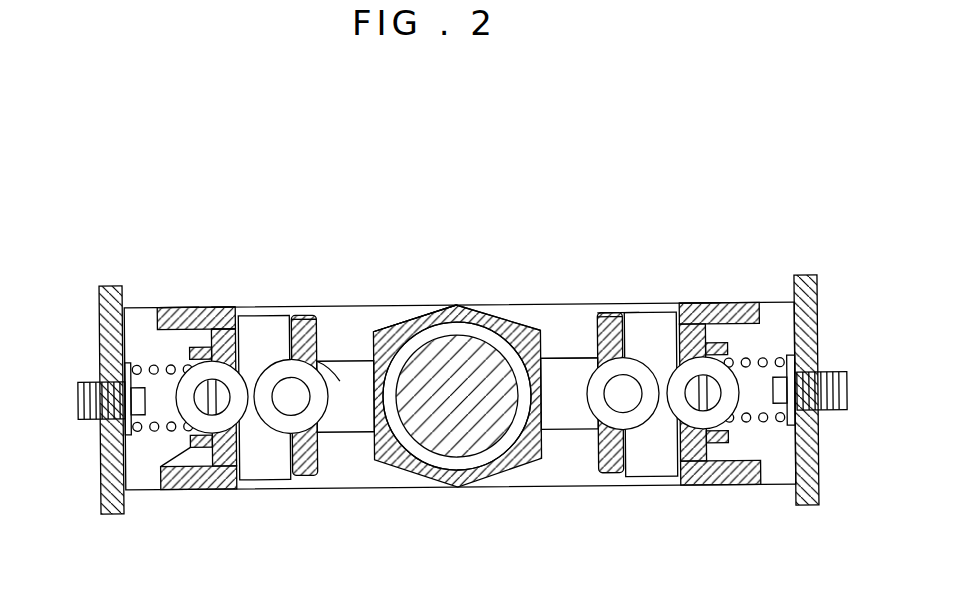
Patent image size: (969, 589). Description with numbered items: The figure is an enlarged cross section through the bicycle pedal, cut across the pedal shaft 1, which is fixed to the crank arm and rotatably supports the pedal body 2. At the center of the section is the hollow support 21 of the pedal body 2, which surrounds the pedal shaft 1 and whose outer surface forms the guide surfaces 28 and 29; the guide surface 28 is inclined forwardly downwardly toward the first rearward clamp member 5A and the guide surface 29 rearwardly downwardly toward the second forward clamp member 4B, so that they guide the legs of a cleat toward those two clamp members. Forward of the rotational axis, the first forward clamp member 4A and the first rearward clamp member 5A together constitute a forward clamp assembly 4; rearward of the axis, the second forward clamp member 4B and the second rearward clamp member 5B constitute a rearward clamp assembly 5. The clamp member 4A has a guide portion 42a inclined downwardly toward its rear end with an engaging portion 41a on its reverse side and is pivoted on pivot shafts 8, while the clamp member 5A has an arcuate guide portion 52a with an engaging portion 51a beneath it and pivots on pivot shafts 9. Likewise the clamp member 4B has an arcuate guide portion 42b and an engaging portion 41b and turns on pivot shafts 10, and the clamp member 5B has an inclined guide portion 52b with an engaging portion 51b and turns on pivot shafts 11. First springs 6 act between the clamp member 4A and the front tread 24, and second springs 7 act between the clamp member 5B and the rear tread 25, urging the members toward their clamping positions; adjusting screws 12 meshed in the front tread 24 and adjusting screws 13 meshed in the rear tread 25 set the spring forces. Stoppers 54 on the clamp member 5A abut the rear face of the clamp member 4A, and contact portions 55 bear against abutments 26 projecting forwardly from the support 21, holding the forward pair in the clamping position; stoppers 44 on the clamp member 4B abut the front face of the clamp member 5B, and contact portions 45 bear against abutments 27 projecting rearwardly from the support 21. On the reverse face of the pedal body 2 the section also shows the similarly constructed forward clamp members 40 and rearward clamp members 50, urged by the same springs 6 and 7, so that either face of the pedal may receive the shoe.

The pedal shaft 1 is at (462, 447).
The pedal body 2 is at (484, 303).
The forward clamp assembly 4 is at (313, 303).
The first forward clamp member 4A is at (744, 303).
The second forward clamp member 4B is at (300, 318).
The rearward clamp assembly 5 is at (190, 304).
The first rearward clamp member 5A is at (604, 312).
The second rearward clamp member 5B is at (178, 304).
The first springs 6 is at (760, 361).
The second springs 7 is at (157, 366).
The pivot shafts 8 is at (660, 470).
The pivot shafts 9 is at (632, 400).
The pivot shafts 10 is at (290, 400).
The pivot shafts 11 is at (187, 447).
The adjusting screws 12 is at (843, 388).
The adjusting screws 13 is at (80, 403).
The hollow support 21 is at (456, 305).
The front tread 24 is at (812, 463).
The rear tread 25 is at (100, 474).
The abutments 26 is at (576, 318).
The abutments 27 is at (330, 362).
The guide surface 28 is at (508, 318).
The guide surface 29 is at (412, 318).
The forward clamp members 40 is at (212, 492).
The engaging portion 41a is at (681, 316).
The engaging portion 41b is at (305, 312).
The guide portion 42a is at (708, 307).
The arcuate guide portion 42b is at (322, 318).
The stoppers 44 is at (262, 316).
The contact portions 45 is at (590, 368).
The rearward clamp members 50 is at (320, 478).
The engaging portion 51a is at (614, 318).
The engaging portion 51b is at (226, 316).
The arcuate guide portion 52a is at (599, 318).
The guide portion 52b is at (230, 316).
The stoppers 54 is at (657, 313).
The contact portions 55 is at (330, 370).